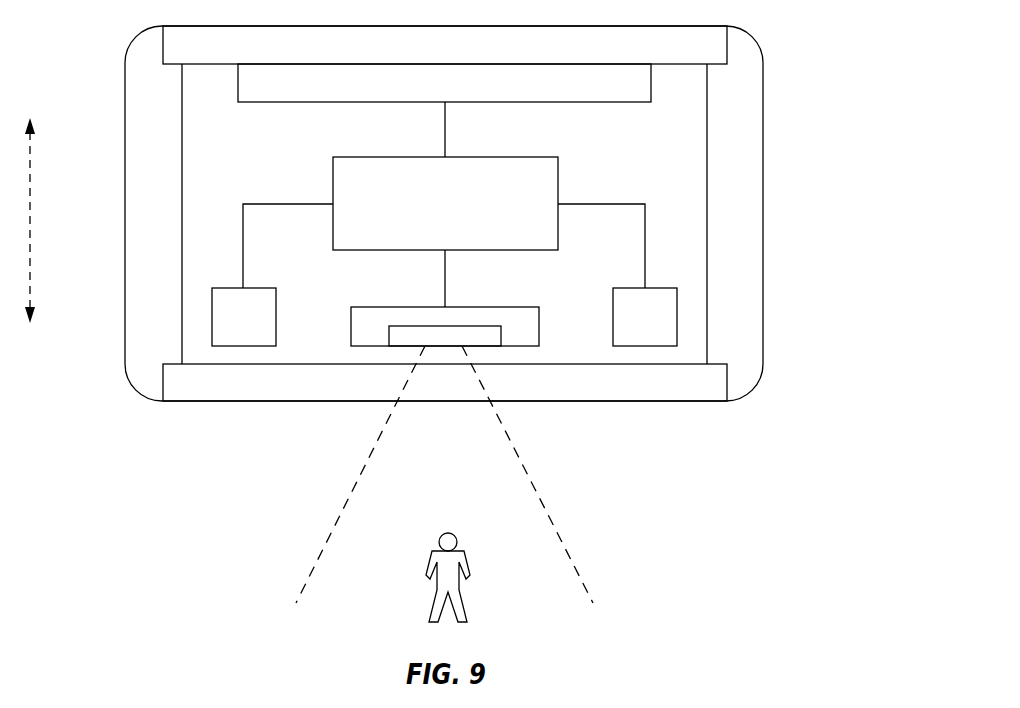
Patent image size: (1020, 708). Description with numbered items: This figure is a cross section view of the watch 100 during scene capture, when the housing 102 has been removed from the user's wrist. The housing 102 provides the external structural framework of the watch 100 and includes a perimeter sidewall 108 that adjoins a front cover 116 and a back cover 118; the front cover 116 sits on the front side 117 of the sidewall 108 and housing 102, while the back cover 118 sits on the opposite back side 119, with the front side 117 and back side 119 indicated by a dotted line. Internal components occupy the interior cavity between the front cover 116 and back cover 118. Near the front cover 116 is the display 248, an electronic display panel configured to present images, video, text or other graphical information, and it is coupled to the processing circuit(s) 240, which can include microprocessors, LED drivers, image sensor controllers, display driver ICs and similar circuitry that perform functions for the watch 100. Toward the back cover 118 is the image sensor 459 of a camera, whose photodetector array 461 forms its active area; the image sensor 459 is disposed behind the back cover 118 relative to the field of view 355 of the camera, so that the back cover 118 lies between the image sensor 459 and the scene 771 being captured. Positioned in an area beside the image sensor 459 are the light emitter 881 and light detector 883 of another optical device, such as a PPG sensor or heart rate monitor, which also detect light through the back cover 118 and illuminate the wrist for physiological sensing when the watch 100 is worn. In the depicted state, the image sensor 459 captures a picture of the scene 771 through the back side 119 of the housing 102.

The watch 100 is at (812, 2).
The housing 102 is at (765, 172).
The perimeter sidewall 108 is at (125, 63).
The front cover 116 is at (729, 48).
The front side 117 is at (32, 205).
The back cover 118 is at (727, 385).
The back side 119 is at (32, 345).
The processing circuit(s) 240 is at (333, 170).
The display 248 is at (626, 104).
The field of view 355 is at (520, 462).
The image sensor 459 is at (539, 318).
The photodetector array 461 is at (389, 337).
The scene 771 is at (486, 585).
The light emitter 881 is at (230, 288).
The light detector 883 is at (660, 288).